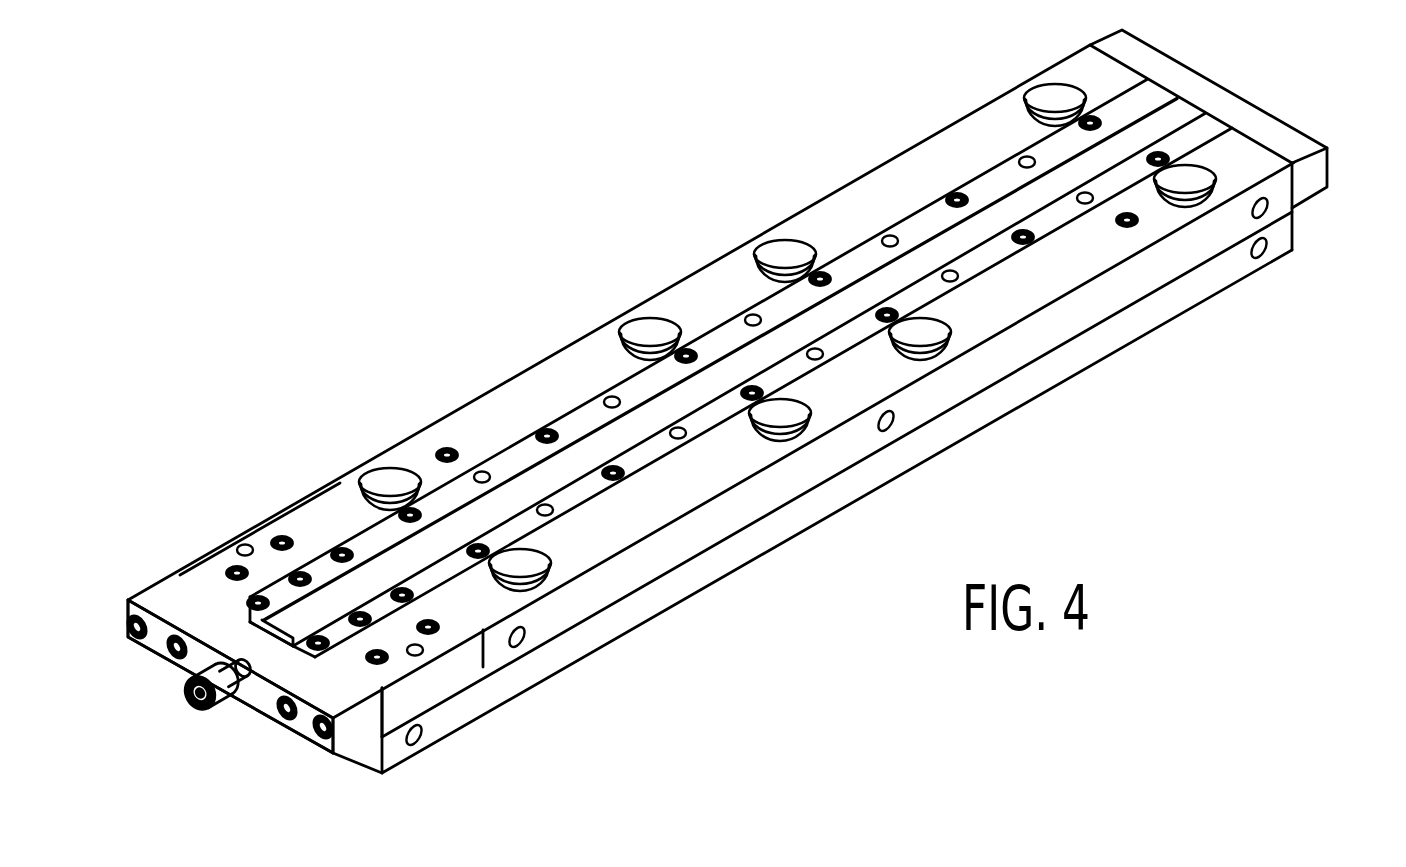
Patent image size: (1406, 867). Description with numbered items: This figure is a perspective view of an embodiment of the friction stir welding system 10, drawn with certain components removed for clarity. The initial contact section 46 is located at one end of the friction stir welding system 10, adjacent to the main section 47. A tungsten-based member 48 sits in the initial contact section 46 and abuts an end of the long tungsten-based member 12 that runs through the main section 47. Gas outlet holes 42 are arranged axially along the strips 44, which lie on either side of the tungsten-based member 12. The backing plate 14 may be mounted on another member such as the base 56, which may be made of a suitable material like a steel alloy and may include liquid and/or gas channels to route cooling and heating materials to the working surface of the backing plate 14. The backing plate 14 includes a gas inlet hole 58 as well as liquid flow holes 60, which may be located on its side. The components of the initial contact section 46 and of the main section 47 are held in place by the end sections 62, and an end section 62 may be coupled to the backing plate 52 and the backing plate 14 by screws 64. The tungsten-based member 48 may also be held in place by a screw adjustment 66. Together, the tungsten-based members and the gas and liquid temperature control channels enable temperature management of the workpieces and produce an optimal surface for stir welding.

The friction stir welding system 10 is at (444, 232).
The tungsten-based member 12 is at (596, 450).
The backing plate 14 is at (970, 132).
The gas outlet holes 42 is at (545, 504).
The strips 44 is at (866, 258).
The initial contact section 46 is at (174, 530).
The main section 47 is at (659, 266).
The tungsten-based member 48 is at (344, 600).
The backing plate 52 is at (272, 528).
The base 56 is at (685, 583).
The gas inlet hole 58 is at (896, 432).
The liquid flow holes 60 is at (1262, 212).
The end sections 62 is at (1170, 68).
The screws 64 is at (165, 649).
The screw adjustment 66 is at (193, 708).